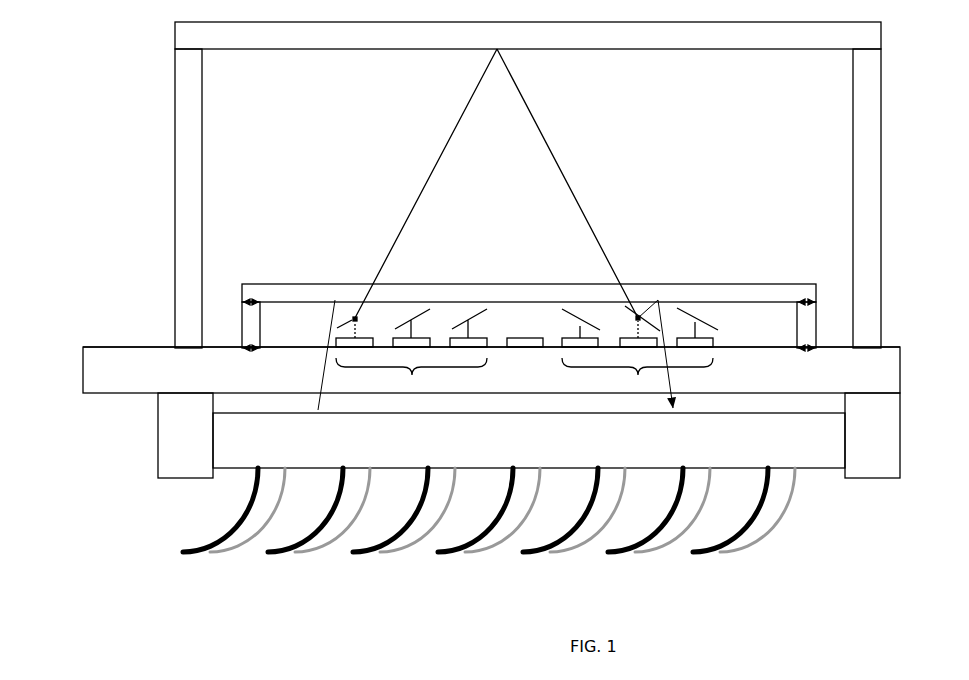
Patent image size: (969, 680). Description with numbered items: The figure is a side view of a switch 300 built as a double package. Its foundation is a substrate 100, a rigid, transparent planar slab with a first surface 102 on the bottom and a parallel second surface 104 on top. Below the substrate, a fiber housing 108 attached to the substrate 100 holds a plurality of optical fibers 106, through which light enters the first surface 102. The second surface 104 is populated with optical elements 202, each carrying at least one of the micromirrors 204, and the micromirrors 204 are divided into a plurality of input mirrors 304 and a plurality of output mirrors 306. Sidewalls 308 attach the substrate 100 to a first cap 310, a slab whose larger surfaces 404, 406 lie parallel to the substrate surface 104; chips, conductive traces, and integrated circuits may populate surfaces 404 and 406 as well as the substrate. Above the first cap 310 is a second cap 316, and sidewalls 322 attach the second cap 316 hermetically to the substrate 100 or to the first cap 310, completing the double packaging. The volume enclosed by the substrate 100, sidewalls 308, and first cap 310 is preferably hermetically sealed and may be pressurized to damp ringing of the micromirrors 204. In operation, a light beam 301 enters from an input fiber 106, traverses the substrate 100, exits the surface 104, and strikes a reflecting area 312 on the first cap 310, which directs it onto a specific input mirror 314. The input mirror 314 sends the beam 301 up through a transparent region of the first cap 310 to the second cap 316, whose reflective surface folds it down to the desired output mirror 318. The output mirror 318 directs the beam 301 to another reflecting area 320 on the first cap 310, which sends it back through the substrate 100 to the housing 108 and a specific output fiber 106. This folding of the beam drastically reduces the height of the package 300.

The substrate 100 is at (82, 375).
The first surface 102 is at (114, 395).
The second surface 104 is at (124, 346).
The optical fibers 106 is at (440, 550).
The fiber housing 108 is at (240, 441).
The optical element 202 is at (718, 347).
The micromirrors 204 is at (714, 326).
The switch 300 is at (116, 156).
The light beam 301 is at (418, 198).
The input mirrors 304 is at (411, 321).
The output mirrors 306 is at (713, 402).
The sidewalls 308 is at (818, 300).
The first cap 310 is at (234, 292).
The reflecting area 312 is at (335, 297).
The input mirror 314 is at (357, 319).
The second cap 316 is at (170, 36).
The output mirror 318 is at (637, 317).
The reflecting area 320 is at (659, 298).
The sidewalls 322 is at (170, 97).
The surface of the first cap 404 is at (458, 282).
The surface of the first cap 406 is at (481, 298).